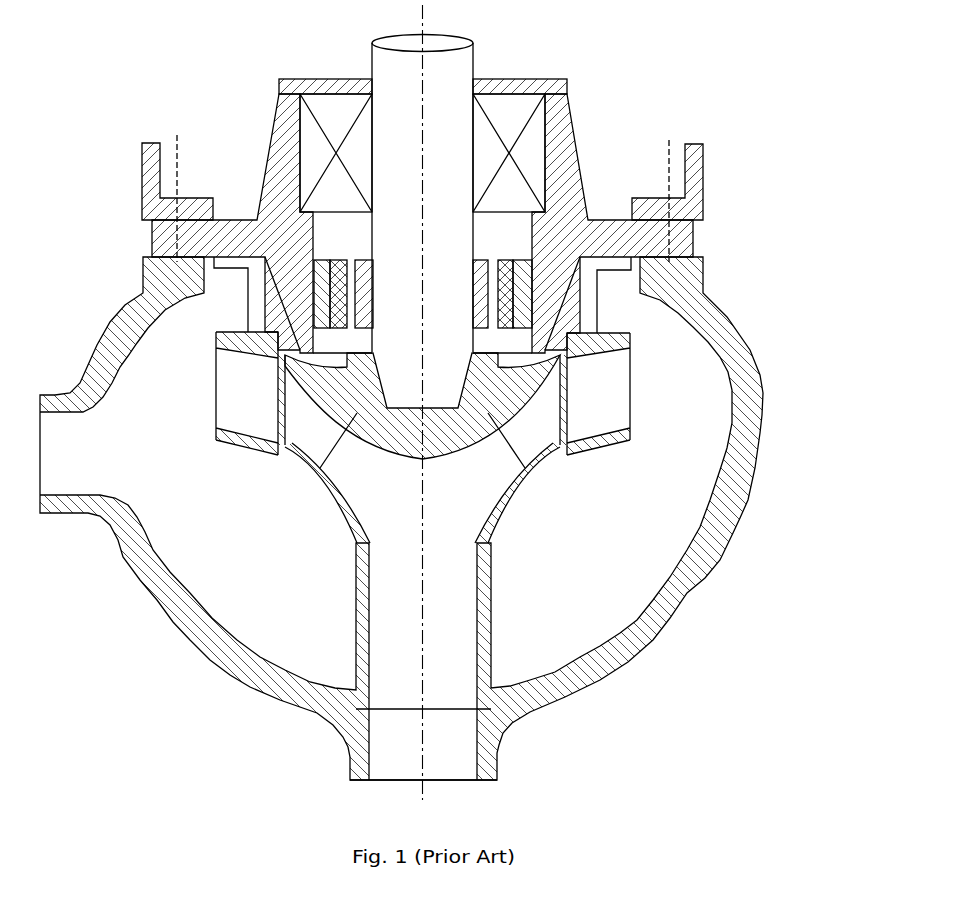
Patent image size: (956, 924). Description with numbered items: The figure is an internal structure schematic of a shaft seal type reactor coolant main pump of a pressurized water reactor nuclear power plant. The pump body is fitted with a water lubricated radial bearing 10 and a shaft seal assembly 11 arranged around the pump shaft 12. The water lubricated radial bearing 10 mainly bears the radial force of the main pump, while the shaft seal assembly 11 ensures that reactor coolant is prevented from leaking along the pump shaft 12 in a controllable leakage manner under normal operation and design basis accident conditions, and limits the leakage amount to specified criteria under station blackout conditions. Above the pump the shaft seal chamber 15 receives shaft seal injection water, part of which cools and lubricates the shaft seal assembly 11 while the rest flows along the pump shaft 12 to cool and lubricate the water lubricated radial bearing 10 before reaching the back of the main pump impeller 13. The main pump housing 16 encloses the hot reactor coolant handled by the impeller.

The water lubricated radial bearing 10 is at (597, 290).
The shaft seal assembly 11 is at (527, 155).
The pump shaft 12 is at (445, 79).
The main pump impeller 13 is at (513, 488).
The shaft seal chamber 15 is at (493, 225).
The main pump housing 16 is at (712, 562).